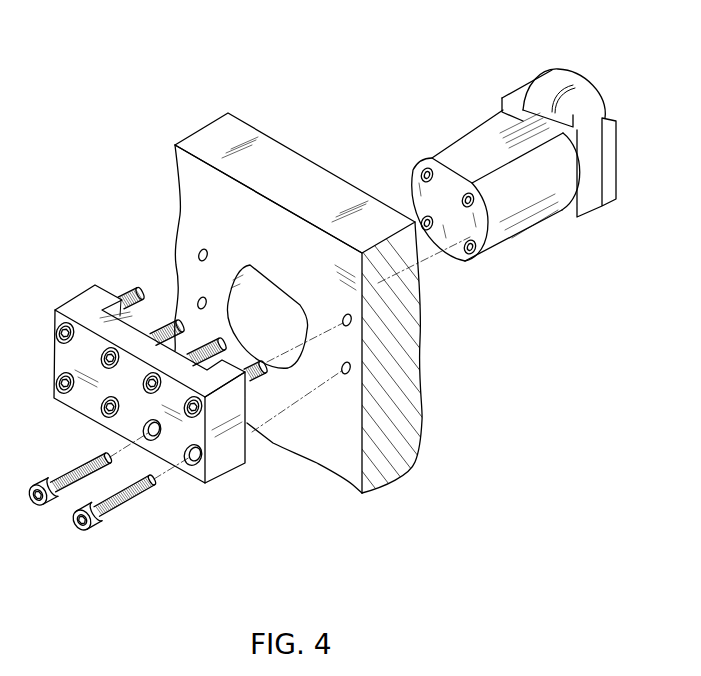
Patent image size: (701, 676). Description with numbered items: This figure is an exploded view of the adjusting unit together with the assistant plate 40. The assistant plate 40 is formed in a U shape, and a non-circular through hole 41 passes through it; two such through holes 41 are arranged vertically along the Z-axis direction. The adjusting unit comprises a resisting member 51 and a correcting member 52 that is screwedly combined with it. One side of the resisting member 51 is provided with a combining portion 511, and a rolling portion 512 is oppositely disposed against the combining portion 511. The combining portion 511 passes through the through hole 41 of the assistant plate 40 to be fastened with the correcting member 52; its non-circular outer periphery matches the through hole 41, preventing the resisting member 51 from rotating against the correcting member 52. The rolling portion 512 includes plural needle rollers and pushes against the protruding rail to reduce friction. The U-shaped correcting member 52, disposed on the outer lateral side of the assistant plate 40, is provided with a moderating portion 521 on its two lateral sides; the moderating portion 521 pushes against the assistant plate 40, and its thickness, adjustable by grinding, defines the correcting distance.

The assistant plate 40 is at (214, 100).
The through hole 41 is at (295, 311).
The resisting member 51 is at (479, 130).
The combining portion 511 is at (436, 158).
The rolling portion 512 is at (546, 72).
The correcting member 52 is at (258, 482).
The moderating portion 521 is at (82, 301).